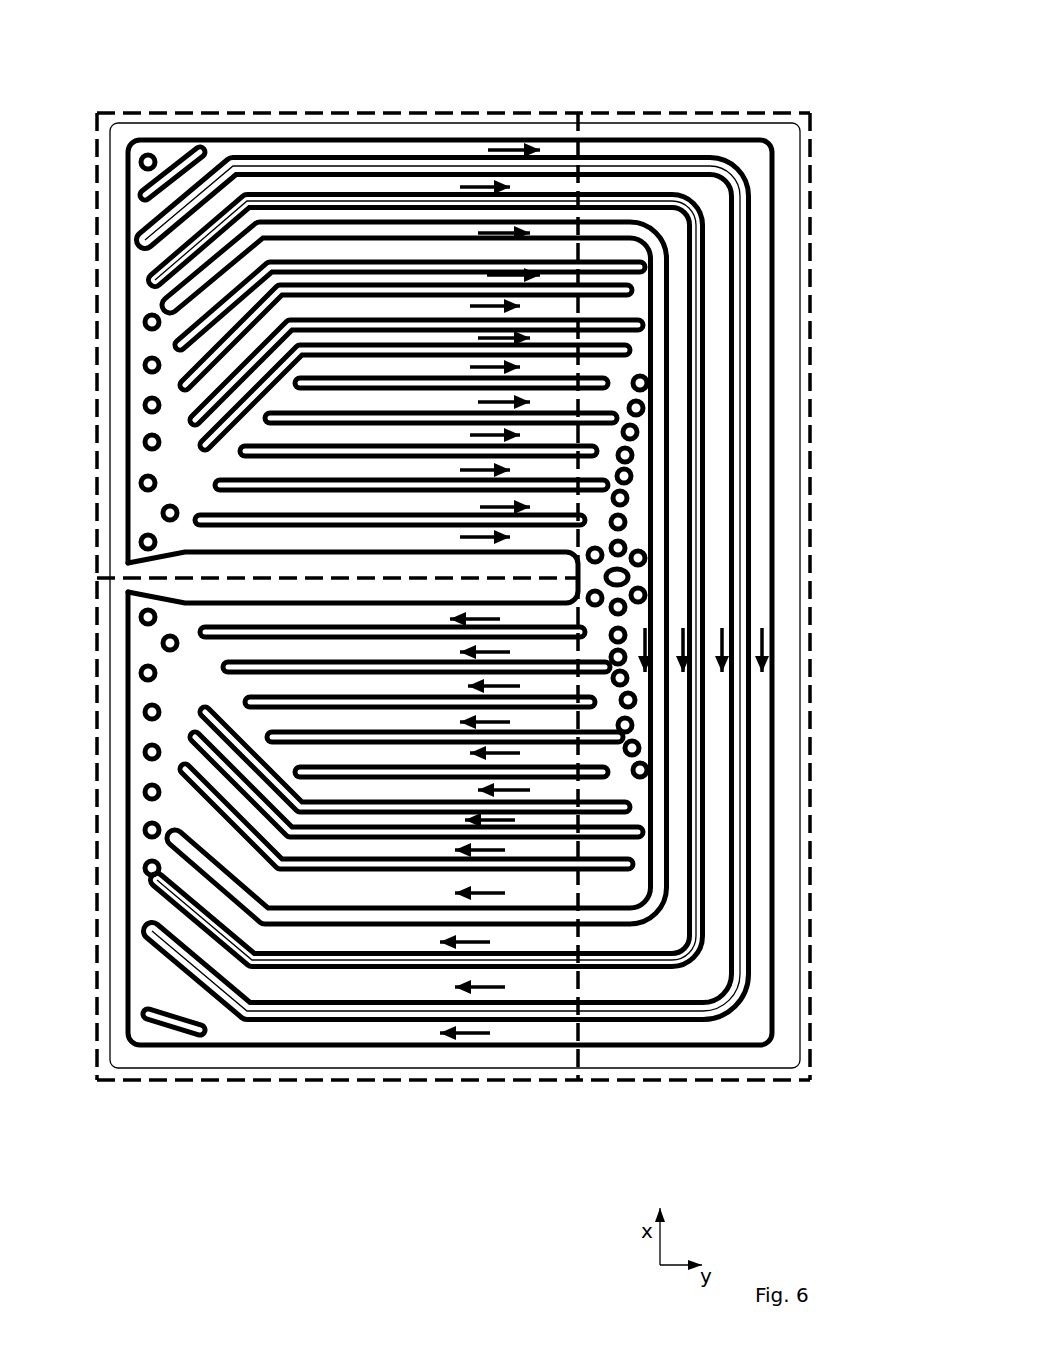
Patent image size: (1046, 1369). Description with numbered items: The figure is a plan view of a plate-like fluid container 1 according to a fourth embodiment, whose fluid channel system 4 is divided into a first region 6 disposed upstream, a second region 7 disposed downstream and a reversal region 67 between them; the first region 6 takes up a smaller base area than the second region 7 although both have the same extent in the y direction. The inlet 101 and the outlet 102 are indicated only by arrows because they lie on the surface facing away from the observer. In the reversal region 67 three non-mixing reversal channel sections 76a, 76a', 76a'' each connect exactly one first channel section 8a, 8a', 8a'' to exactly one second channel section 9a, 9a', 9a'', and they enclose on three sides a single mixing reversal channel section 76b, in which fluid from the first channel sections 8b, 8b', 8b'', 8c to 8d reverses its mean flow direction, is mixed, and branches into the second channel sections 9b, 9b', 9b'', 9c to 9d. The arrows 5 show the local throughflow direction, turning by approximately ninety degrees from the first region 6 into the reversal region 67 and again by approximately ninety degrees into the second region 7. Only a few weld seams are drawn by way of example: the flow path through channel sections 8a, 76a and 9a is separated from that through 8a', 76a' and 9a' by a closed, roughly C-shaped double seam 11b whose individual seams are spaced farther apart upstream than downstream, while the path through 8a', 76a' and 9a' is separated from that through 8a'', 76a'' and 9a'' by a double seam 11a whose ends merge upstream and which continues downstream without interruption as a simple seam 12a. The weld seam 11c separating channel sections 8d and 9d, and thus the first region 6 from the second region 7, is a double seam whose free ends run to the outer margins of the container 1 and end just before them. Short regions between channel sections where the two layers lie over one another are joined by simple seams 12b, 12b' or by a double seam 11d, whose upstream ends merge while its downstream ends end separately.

The plate-like fluid container 1 is at (95, 108).
The fluid channel system 4 is at (748, 160).
The arrows 5 is at (518, 310).
The first region 6 is at (270, 110).
The second region 7 is at (398, 1088).
The first channel section 8a is at (509, 102).
The first channel section 8a' is at (508, 121).
The first channel section 8a'' is at (543, 146).
The first channel section 8b is at (444, 202).
The first channel section 8b' is at (456, 193).
The first channel section 8b'' is at (485, 179).
The first channel section 8c is at (341, 367).
The first channel section 8d is at (285, 540).
The second channel section 9a is at (471, 1105).
The second channel section 9a' is at (479, 1021).
The second channel section 9a'' is at (504, 1038).
The second channel section 9b is at (421, 976).
The second channel section 9b' is at (396, 990).
The second channel section 9b'' is at (443, 954).
The second channel section 9c is at (445, 1000).
The second channel section 9d is at (225, 625).
The double seam 11a is at (350, 195).
The double seam 11b is at (312, 160).
The weld seam 11c is at (226, 598).
The double seam 11d is at (180, 1022).
The simple seam 12a is at (703, 258).
The simple seam 12b is at (125, 101).
The simple seam 12b' is at (172, 115).
The reversal region 67 is at (814, 566).
The non-mixing reversal channel section 76a is at (812, 481).
The non-mixing reversal channel section 76a' is at (792, 519).
The non-mixing reversal channel section 76a'' is at (776, 550).
The mixing reversal channel section 76b is at (632, 530).
The inlet 101 is at (133, 511).
The outlet 102 is at (133, 644).